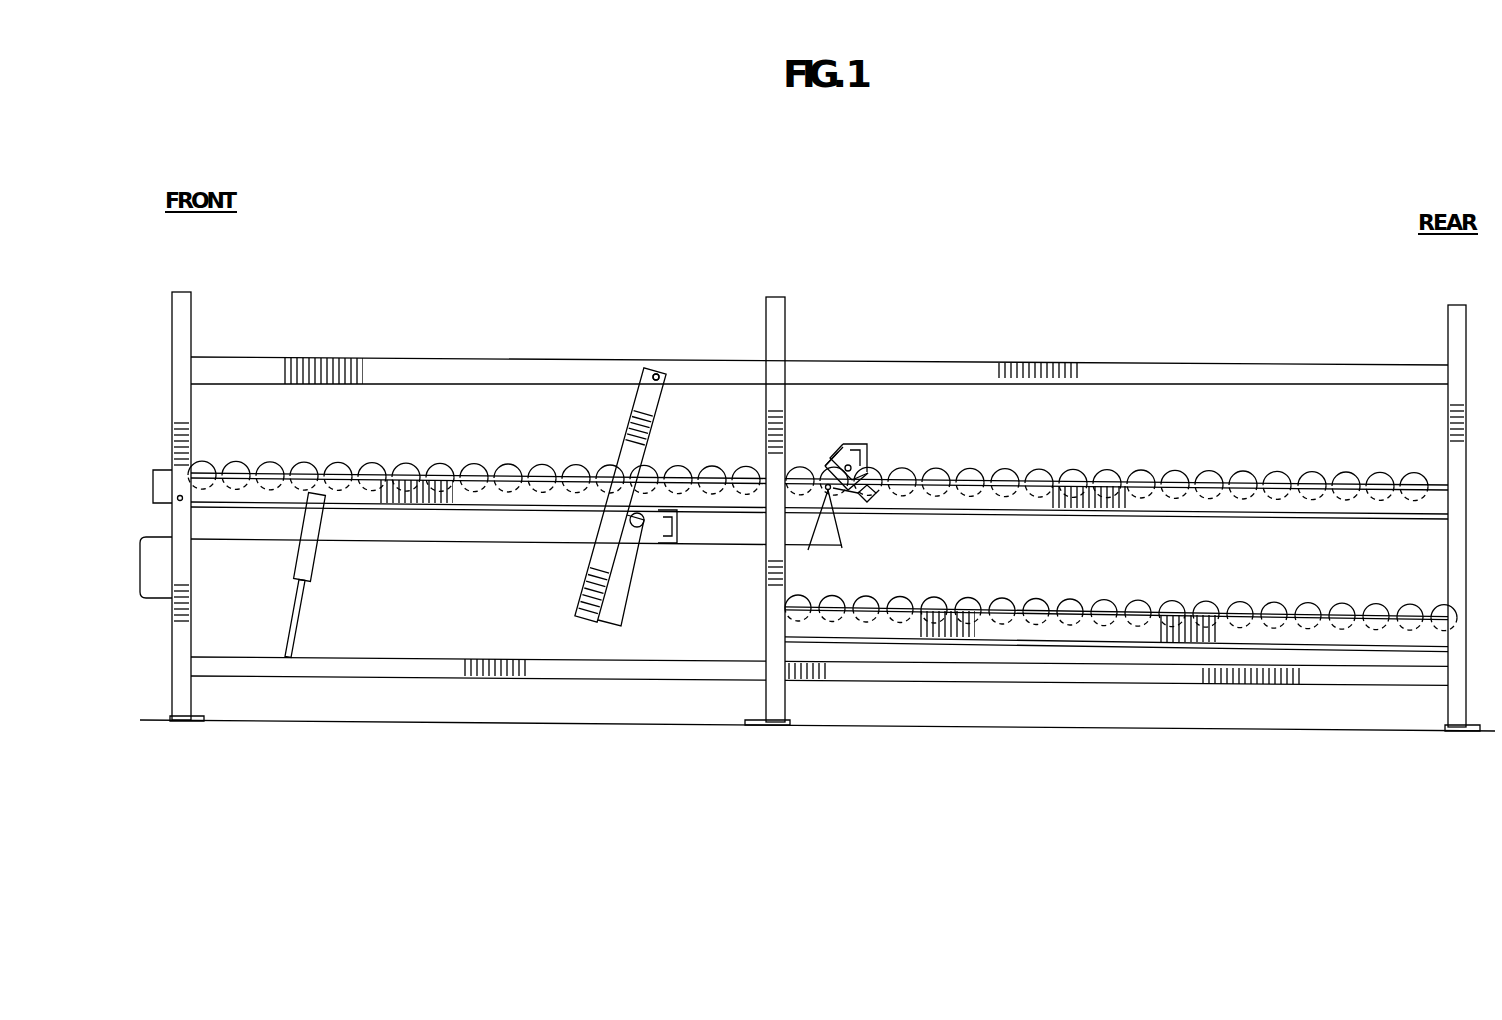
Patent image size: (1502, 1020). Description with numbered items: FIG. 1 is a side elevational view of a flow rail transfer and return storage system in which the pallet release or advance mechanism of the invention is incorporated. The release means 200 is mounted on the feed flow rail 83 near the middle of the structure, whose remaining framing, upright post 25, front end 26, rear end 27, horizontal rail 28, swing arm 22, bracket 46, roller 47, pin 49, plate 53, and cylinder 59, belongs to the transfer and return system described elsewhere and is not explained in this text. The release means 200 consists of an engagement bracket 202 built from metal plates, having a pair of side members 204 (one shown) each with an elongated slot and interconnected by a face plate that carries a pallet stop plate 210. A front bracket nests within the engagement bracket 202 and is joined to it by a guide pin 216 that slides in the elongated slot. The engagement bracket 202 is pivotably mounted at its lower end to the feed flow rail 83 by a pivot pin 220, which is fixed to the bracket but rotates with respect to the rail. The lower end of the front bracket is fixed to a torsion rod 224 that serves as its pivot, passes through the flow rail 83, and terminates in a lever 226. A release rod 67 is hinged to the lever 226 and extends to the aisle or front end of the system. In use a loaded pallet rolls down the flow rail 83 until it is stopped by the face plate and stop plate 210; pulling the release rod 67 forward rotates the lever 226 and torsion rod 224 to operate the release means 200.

The swing arm 22 is at (605, 452).
The upright post 25 is at (191, 310).
The front end 26 is at (165, 300).
The rear end 27 is at (1470, 300).
The horizontal rail 28 is at (413, 359).
The stop bracket 46 is at (678, 523).
The arm roller 47 is at (641, 524).
The pivot pin 49 is at (650, 402).
The arm plate 53 is at (620, 612).
The actuator cylinder 59 is at (318, 581).
The release rod 67 is at (440, 541).
The feed flow rail 83 is at (1230, 508).
The release means 200 is at (864, 440).
The engagement bracket 202 is at (872, 476).
The side member 204 is at (835, 450).
The stop plate 210 is at (858, 456).
The guide pin 216 is at (870, 462).
The pivot pin 220 is at (872, 496).
The torsion rod 224 is at (810, 548).
The lever 226 is at (836, 500).